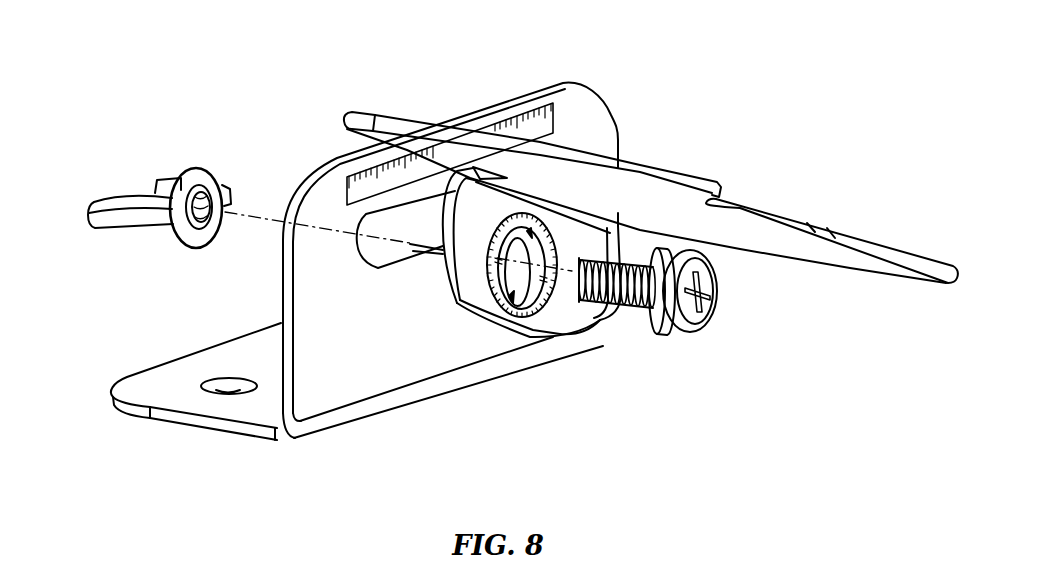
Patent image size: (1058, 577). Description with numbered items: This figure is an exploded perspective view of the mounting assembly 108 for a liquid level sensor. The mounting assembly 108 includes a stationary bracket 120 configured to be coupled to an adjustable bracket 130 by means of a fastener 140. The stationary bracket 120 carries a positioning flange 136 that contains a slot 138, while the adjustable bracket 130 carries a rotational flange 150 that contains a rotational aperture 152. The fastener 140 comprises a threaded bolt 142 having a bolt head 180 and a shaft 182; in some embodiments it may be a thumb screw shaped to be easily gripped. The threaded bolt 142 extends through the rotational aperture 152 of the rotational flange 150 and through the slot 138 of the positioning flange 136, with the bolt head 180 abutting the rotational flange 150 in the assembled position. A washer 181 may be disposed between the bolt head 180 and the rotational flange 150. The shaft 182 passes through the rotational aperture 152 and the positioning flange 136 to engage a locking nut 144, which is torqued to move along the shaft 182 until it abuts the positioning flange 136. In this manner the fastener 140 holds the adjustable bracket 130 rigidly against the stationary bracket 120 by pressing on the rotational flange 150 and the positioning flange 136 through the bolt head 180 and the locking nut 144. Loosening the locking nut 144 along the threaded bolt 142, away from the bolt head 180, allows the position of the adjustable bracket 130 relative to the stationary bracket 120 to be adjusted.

The mounting assembly 108 is at (722, 60).
The stationary bracket 120 is at (215, 438).
The adjustable bracket 130 is at (889, 262).
The positioning flange 136 is at (592, 86).
The slot 138 is at (352, 249).
The fastener 140 is at (692, 332).
The threaded bolt 142 is at (598, 313).
The locking nut 144 is at (97, 197).
The rotational flange 150 is at (482, 322).
The rotational aperture 152 is at (518, 322).
The bolt head 180 is at (703, 327).
The washer 181 is at (665, 337).
The shaft 182 is at (637, 307).